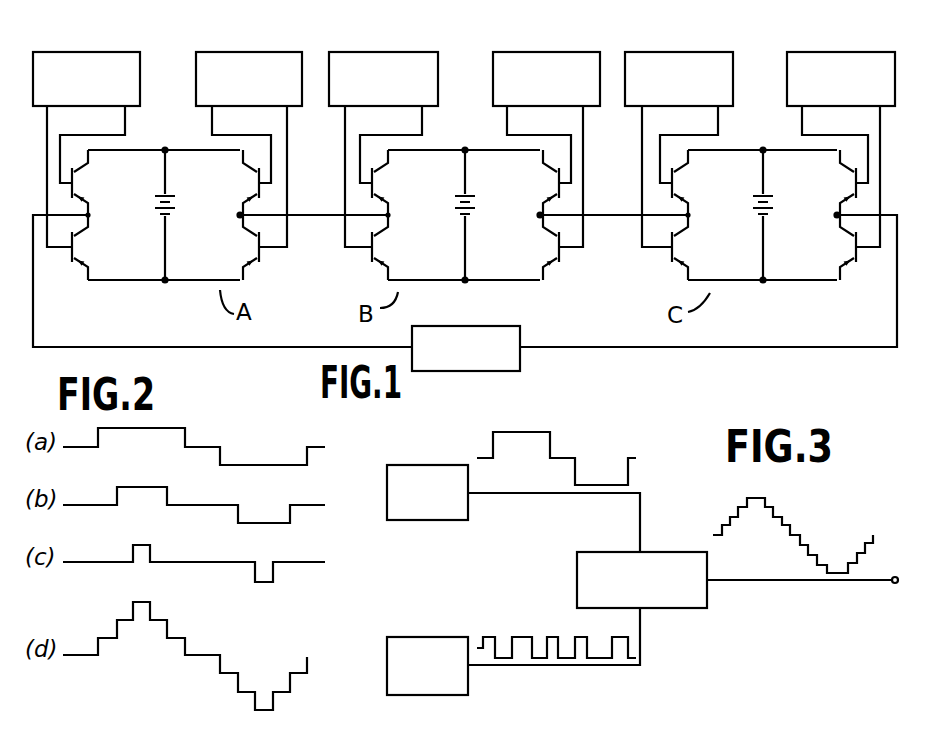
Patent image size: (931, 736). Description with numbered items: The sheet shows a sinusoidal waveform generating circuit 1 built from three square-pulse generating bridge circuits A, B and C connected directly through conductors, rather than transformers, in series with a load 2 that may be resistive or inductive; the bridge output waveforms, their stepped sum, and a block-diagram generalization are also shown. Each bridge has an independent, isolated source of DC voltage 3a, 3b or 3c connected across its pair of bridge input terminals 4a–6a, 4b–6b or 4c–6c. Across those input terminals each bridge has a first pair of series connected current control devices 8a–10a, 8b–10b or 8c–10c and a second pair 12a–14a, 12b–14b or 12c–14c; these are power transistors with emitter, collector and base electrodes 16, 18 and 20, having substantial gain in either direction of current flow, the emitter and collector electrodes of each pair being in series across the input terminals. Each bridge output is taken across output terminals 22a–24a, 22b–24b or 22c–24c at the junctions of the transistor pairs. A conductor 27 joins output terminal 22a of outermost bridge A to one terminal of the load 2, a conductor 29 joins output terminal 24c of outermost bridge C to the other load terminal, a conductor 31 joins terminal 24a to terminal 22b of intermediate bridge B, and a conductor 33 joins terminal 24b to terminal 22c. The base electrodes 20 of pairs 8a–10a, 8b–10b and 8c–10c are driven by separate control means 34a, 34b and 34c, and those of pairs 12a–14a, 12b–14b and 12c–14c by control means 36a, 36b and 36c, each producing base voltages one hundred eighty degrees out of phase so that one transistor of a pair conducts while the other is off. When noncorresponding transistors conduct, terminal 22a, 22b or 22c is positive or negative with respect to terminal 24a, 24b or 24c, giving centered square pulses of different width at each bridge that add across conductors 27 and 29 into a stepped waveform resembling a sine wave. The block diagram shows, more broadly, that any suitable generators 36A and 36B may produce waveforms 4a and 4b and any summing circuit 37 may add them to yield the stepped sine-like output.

In FIG. 1, the sinusoidal waveform generating circuit 1 is at (97, 39).
In FIG. 1, the load 2 is at (507, 325).
In FIG. 1, the source of DC voltage 3a is at (223, 210).
In FIG. 1, the source of DC voltage 3b is at (523, 210).
In FIG. 1, the source of DC voltage 3c is at (820, 210).
In FIG. 1, the bridge input terminal 4a is at (175, 134).
In FIG. 3, the bridge input terminal 4a is at (622, 438).
In FIG. 1, the bridge input terminal 4b is at (465, 150).
In FIG. 3, the bridge input terminal 4b is at (558, 613).
In FIG. 1, the bridge input terminal 4c is at (770, 136).
In FIG. 1, the bridge input terminal 6a is at (165, 281).
In FIG. 1, the bridge input terminal 6b is at (465, 281).
In FIG. 1, the bridge input terminal 6c is at (763, 281).
In FIG. 1, the current control device 8a is at (139, 184).
In FIG. 1, the current control device 8b is at (435, 184).
In FIG. 1, the current control device 8c is at (733, 189).
In FIG. 1, the current control device 10a is at (146, 258).
In FIG. 1, the current control device 10b is at (444, 258).
In FIG. 1, the current control device 10c is at (742, 253).
In FIG. 1, the current control device 12a is at (246, 172).
In FIG. 1, the current control device 12b is at (546, 172).
In FIG. 1, the current control device 12c is at (846, 178).
In FIG. 1, the current control device 14a is at (246, 234).
In FIG. 1, the current control device 14b is at (546, 237).
In FIG. 1, the current control device 14c is at (845, 246).
In FIG. 1, the emitter electrode 16 is at (82, 198).
In FIG. 1, the collector electrode 18 is at (86, 165).
In FIG. 1, the base electrode 20 is at (72, 184).
In FIG. 1, the output terminal 22a is at (141, 210).
In FIG. 1, the output terminal 22b is at (441, 210).
In FIG. 1, the output terminal 22c is at (739, 210).
In FIG. 1, the output terminal 24a is at (239, 216).
In FIG. 1, the output terminal 24b is at (539, 216).
In FIG. 1, the output terminal 24c is at (836, 216).
In FIG. 1, the conductor 27 is at (36, 315).
In FIG. 1, the conductor 29 is at (897, 310).
In FIG. 1, the conductor 31 is at (310, 216).
In FIG. 1, the conductor 33 is at (611, 216).
In FIG. 1, the control means 34a is at (181, 48).
In FIG. 1, the control means 34b is at (434, 48).
In FIG. 1, the control means 34c is at (732, 48).
In FIG. 1, the control means 36a is at (312, 48).
In FIG. 1, the control means 36b is at (596, 48).
In FIG. 1, the control means 36c is at (886, 48).
In FIG. 3, the generator 36A is at (449, 461).
In FIG. 3, the generator 36B is at (441, 634).
In FIG. 3, the summing circuit 37 is at (670, 610).